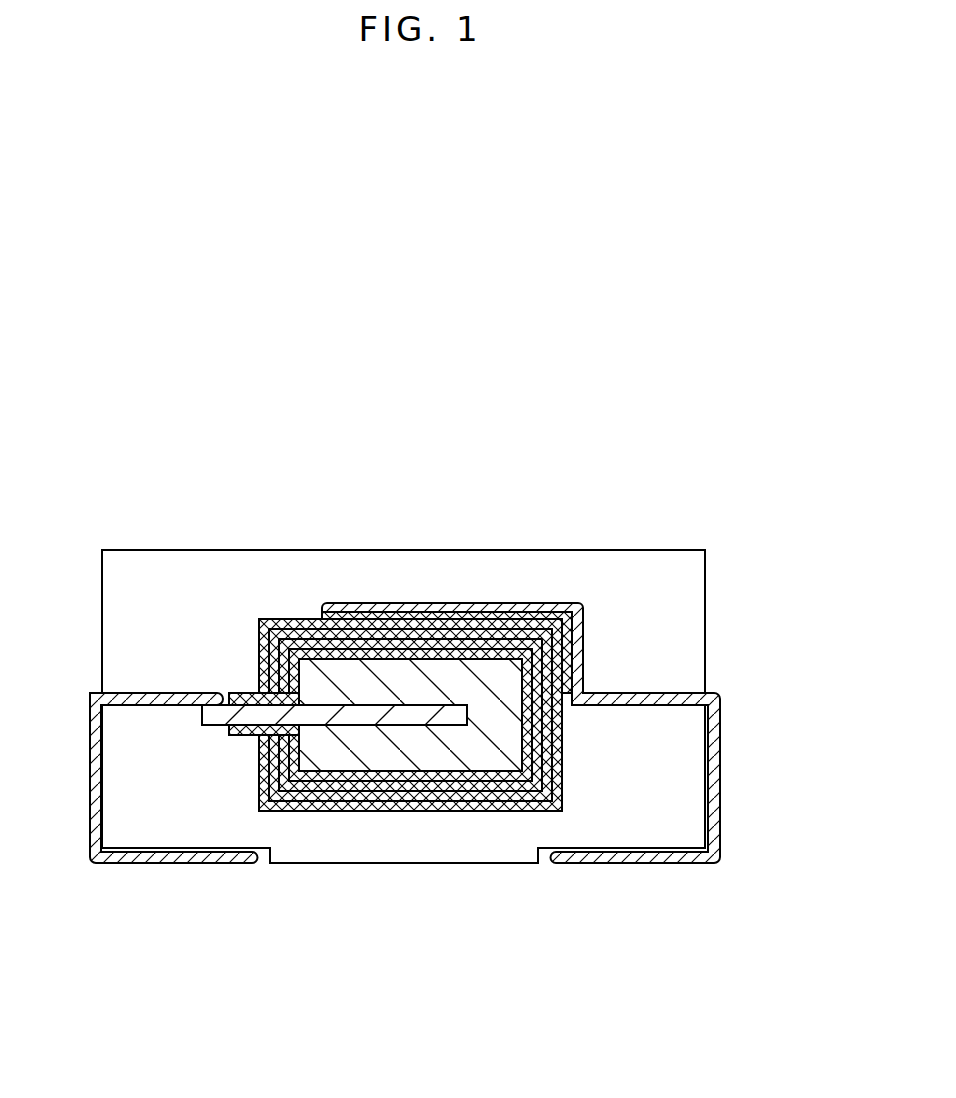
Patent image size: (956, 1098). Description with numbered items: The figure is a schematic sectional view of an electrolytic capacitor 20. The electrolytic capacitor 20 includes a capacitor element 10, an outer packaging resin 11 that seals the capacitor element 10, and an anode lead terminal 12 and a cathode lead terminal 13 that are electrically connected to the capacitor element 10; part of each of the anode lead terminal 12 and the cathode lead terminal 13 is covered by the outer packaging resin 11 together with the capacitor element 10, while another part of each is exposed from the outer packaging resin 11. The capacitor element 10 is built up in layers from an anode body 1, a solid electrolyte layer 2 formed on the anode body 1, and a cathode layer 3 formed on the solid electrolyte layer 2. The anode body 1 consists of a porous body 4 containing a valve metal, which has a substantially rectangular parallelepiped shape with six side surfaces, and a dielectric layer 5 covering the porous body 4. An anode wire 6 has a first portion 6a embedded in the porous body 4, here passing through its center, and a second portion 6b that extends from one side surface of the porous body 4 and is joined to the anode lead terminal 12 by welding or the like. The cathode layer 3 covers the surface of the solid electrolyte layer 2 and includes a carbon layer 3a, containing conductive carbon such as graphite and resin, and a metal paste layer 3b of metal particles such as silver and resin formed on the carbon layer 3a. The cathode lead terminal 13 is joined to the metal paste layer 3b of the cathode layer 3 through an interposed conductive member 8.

The anode body 1 is at (392, 618).
The solid electrolyte layer 2 is at (358, 640).
The cathode layer 3 is at (410, 633).
The carbon layer 3a is at (380, 653).
The metal paste layer 3b is at (422, 623).
The porous body 4 is at (322, 680).
The dielectric layer 5 is at (300, 652).
The anode wire 6 is at (334, 819).
The first portion 6a is at (380, 713).
The second portion 6b is at (213, 712).
The conductive member 8 is at (468, 612).
The capacitor element 10 is at (407, 615).
The outer packaging resin 11 is at (680, 603).
The anode lead terminal 12 is at (148, 693).
The cathode lead terminal 13 is at (532, 603).
The electrolytic capacitor 20 is at (439, 671).